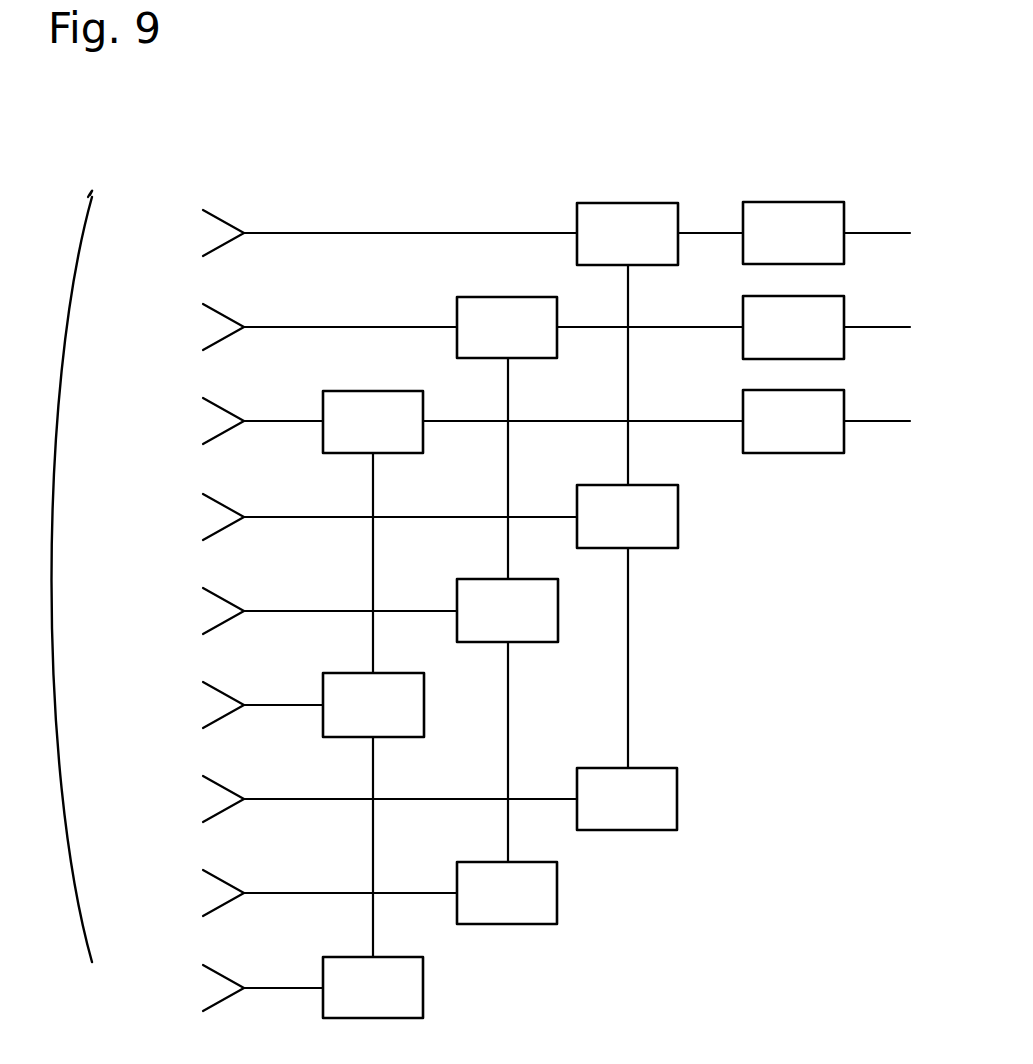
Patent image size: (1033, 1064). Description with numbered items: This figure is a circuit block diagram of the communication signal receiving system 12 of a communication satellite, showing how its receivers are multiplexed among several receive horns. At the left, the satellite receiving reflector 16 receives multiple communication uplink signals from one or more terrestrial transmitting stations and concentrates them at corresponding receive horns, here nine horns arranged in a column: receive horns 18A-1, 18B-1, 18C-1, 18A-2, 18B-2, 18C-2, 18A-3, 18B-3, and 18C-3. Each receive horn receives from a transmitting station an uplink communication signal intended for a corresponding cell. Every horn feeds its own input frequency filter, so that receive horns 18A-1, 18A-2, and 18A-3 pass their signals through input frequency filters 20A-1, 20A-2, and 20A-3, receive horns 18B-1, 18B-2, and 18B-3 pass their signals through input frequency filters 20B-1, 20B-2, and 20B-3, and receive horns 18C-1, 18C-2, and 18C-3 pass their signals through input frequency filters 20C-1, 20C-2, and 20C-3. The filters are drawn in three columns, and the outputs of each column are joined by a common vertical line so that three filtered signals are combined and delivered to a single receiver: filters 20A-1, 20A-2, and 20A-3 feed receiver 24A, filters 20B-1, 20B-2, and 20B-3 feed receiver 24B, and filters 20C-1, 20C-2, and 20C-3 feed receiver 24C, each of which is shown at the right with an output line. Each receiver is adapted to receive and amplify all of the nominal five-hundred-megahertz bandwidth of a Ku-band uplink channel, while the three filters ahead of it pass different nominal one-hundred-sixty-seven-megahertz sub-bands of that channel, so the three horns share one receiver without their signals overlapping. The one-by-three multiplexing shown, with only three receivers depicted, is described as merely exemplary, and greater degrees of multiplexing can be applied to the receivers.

The communication signal receiving system 12 is at (392, 158).
The satellite receiving reflector 16 is at (83, 198).
The receive horn 18A-1 is at (228, 225).
The receive horn 18B-1 is at (228, 319).
The receive horn 18C-1 is at (228, 413).
The receive horn 18A-2 is at (228, 509).
The receive horn 18B-2 is at (228, 603).
The receive horn 18C-2 is at (228, 697).
The receive horn 18A-3 is at (228, 791).
The receive horn 18B-3 is at (228, 885).
The receive horn 18C-3 is at (228, 980).
The input frequency filter 20A-1 is at (607, 203).
The input frequency filter 20B-1 is at (485, 313).
The input frequency filter 20C-1 is at (332, 408).
The input frequency filter 20A-2 is at (585, 500).
The input frequency filter 20B-2 is at (473, 598).
The input frequency filter 20C-2 is at (338, 690).
The input frequency filter 20A-3 is at (595, 778).
The input frequency filter 20B-3 is at (468, 880).
The input frequency filter 20C-3 is at (330, 973).
The receiver 24A is at (842, 225).
The receiver 24B is at (843, 318).
The receiver 24C is at (840, 407).